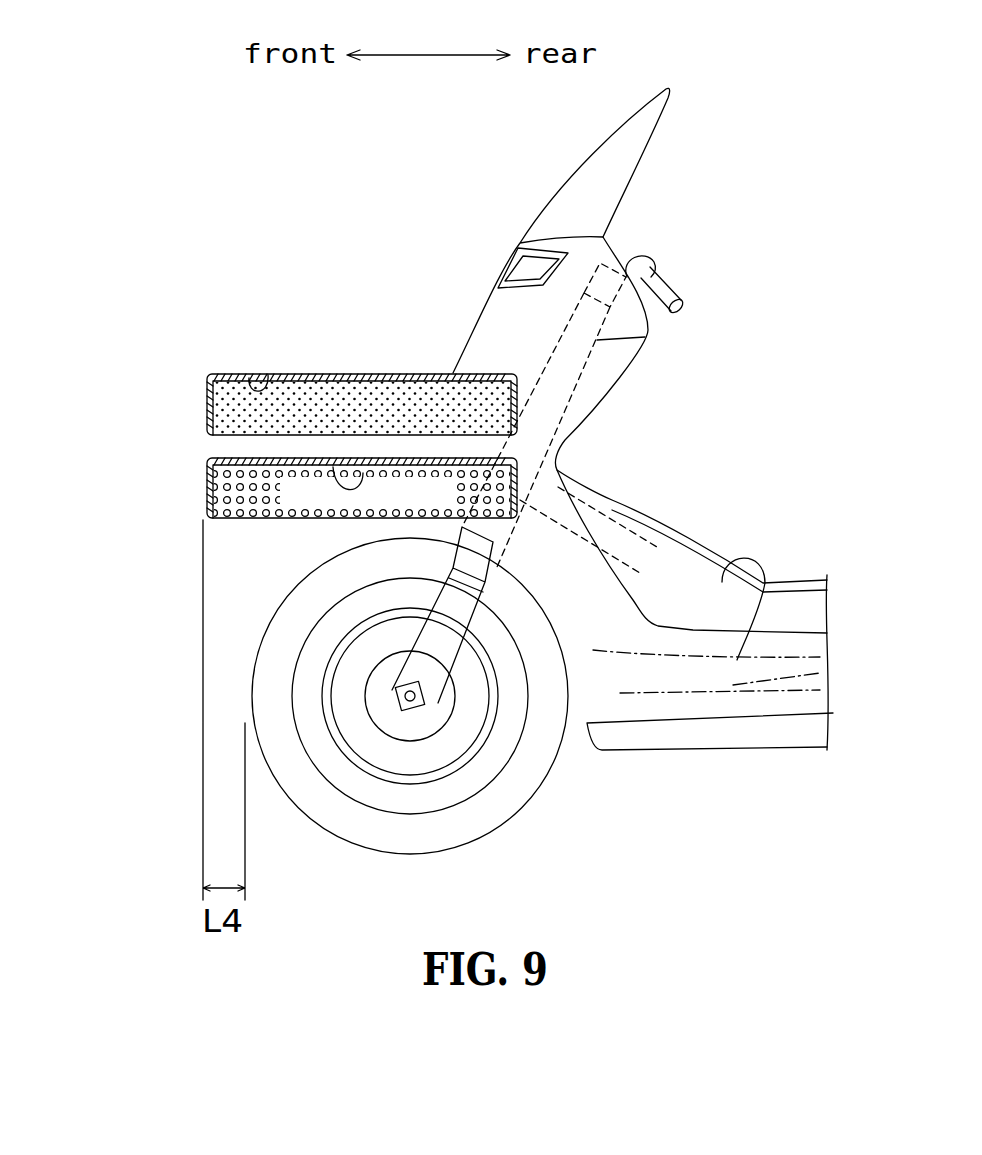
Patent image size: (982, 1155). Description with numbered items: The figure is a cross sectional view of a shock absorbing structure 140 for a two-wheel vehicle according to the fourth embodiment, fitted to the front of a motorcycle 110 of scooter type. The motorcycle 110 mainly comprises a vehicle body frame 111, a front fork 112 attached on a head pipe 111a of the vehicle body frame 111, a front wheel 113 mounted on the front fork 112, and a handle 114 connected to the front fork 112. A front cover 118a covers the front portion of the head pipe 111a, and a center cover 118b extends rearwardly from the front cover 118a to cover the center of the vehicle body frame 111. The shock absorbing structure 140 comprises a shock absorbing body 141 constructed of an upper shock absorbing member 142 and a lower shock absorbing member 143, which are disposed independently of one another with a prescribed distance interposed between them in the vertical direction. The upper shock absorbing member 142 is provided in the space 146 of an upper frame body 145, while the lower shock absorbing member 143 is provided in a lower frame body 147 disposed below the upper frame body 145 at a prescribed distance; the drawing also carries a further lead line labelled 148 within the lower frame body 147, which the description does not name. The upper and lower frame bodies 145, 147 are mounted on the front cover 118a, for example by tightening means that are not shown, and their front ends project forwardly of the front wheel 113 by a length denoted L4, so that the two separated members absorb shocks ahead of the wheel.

The motorcycle 110 is at (771, 245).
The vehicle body frame 111 is at (607, 513).
The head pipe 111a is at (643, 340).
The front fork 112 is at (293, 597).
The front wheel 113 is at (257, 697).
The handle 114 is at (650, 252).
The front cover 118a is at (484, 333).
The center cover 118b is at (737, 660).
The shock absorbing structure 140 is at (186, 336).
The shock absorbing body 141 is at (128, 370).
The upper shock absorbing member 142 is at (227, 392).
The lower shock absorbing member 143 is at (218, 485).
The upper frame body 145 is at (320, 377).
The space 146 is at (268, 375).
The lower frame body 147 is at (409, 466).
The foam core of lower layer 148 is at (375, 462).